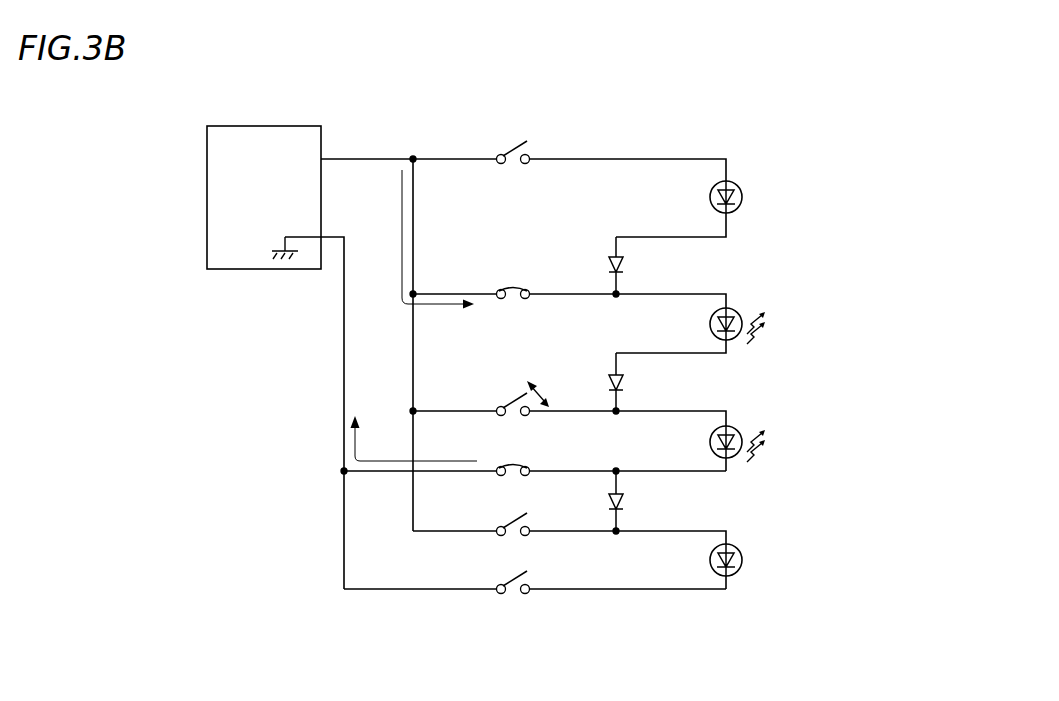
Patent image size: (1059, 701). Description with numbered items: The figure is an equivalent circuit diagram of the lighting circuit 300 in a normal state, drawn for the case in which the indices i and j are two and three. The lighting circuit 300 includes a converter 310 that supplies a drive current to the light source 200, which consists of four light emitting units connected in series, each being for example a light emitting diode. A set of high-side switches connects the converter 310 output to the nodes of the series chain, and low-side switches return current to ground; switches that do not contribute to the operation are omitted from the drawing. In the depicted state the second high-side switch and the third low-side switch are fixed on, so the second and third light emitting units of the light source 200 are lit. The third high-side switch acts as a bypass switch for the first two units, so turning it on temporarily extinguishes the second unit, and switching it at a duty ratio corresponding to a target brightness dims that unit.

The converter 310 is at (237, 123).
The lighting circuit 300 is at (456, 387).
The light source 200 is at (741, 400).